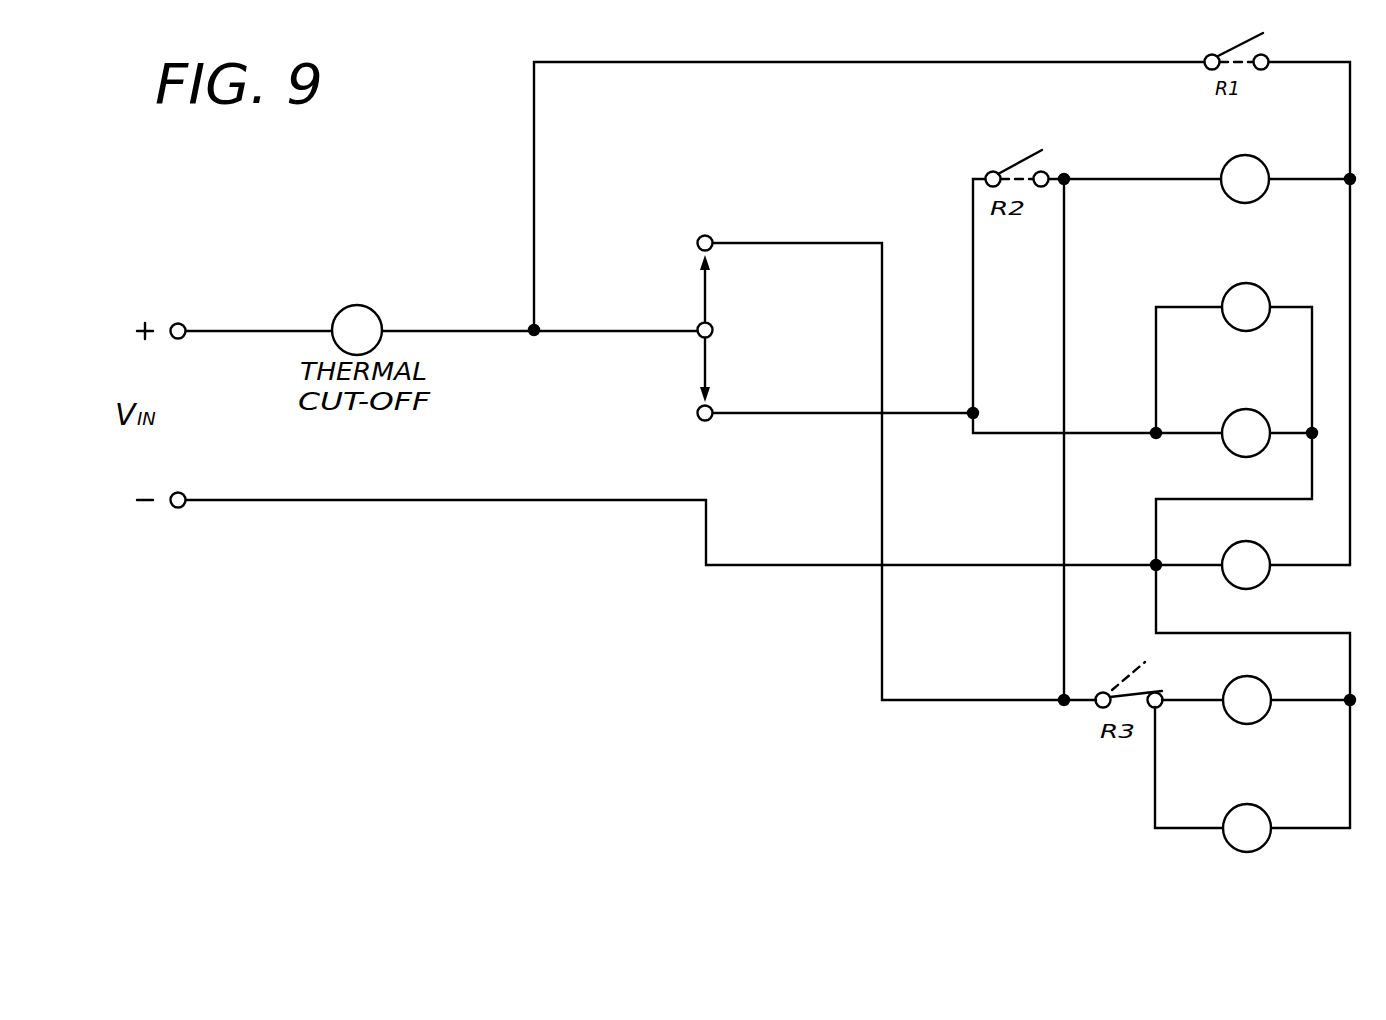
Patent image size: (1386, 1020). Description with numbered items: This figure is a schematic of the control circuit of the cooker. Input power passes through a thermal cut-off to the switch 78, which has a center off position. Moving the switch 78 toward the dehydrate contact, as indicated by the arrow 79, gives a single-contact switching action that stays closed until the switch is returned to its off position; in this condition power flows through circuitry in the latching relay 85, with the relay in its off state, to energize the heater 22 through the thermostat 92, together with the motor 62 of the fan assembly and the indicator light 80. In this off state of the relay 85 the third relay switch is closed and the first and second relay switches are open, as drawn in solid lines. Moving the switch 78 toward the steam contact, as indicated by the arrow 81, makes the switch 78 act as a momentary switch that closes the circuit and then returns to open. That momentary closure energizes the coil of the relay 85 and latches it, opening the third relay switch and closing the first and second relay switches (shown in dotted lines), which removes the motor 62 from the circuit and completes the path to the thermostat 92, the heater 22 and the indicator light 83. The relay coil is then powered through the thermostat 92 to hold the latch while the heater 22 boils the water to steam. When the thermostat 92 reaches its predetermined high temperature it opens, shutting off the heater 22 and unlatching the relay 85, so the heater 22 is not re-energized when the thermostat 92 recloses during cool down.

The heater 22 is at (1268, 579).
The motor 62 is at (1270, 712).
The switch 78 is at (717, 332).
The arrow 79 is at (703, 300).
The indicator light 80 is at (1272, 838).
The arrow 81 is at (700, 358).
The indicator light 83 is at (1252, 282).
The latching relay 85 is at (1240, 410).
The thermostat 92 is at (1257, 157).